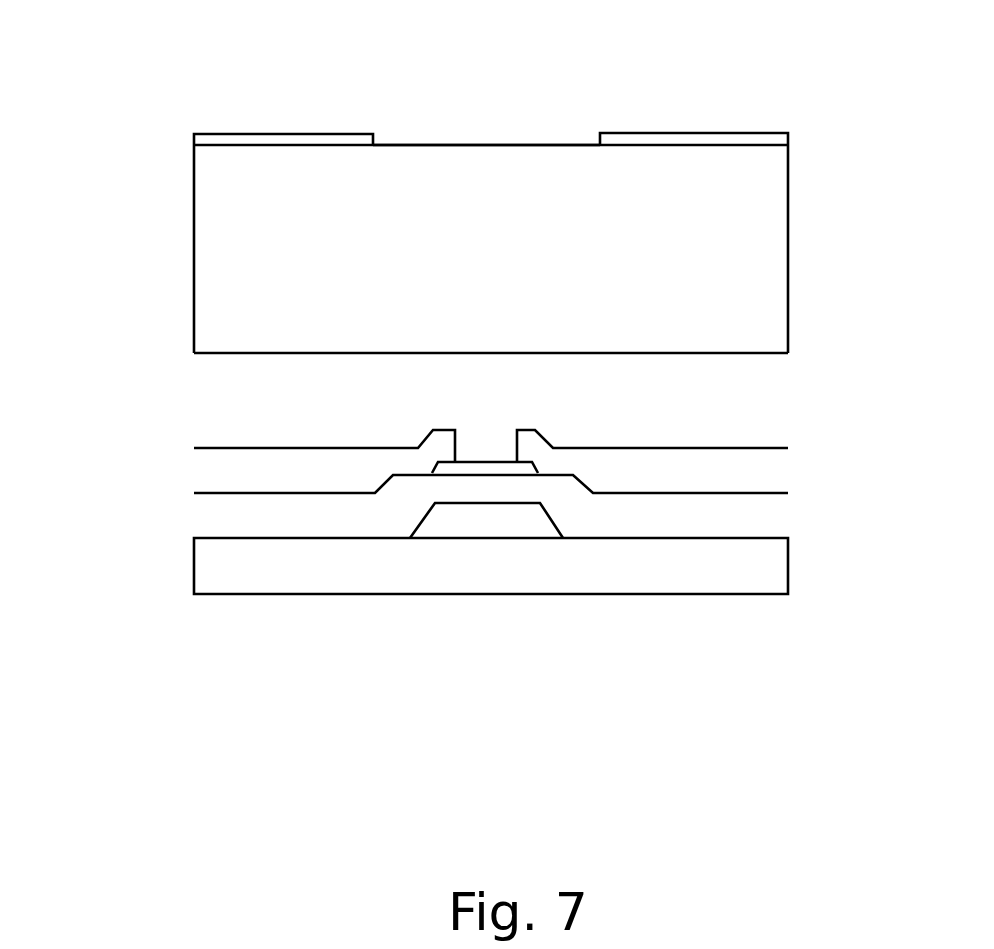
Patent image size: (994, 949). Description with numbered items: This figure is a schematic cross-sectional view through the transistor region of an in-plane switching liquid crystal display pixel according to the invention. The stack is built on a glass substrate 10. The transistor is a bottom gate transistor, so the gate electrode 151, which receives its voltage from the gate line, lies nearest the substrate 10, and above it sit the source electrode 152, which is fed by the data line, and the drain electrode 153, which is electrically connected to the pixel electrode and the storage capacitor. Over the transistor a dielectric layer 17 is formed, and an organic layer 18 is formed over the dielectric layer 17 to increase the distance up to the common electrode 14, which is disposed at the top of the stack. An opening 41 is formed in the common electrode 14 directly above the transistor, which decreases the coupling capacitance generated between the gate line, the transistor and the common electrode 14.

The glass substrate 10 is at (778, 568).
The gate electrode 151 is at (462, 525).
The drain electrode 153 is at (217, 475).
The source electrode 152 is at (778, 470).
The dielectric layer 17 is at (778, 400).
The organic layer 18 is at (778, 264).
The common electrode 14 is at (780, 142).
The opening 41 is at (507, 138).